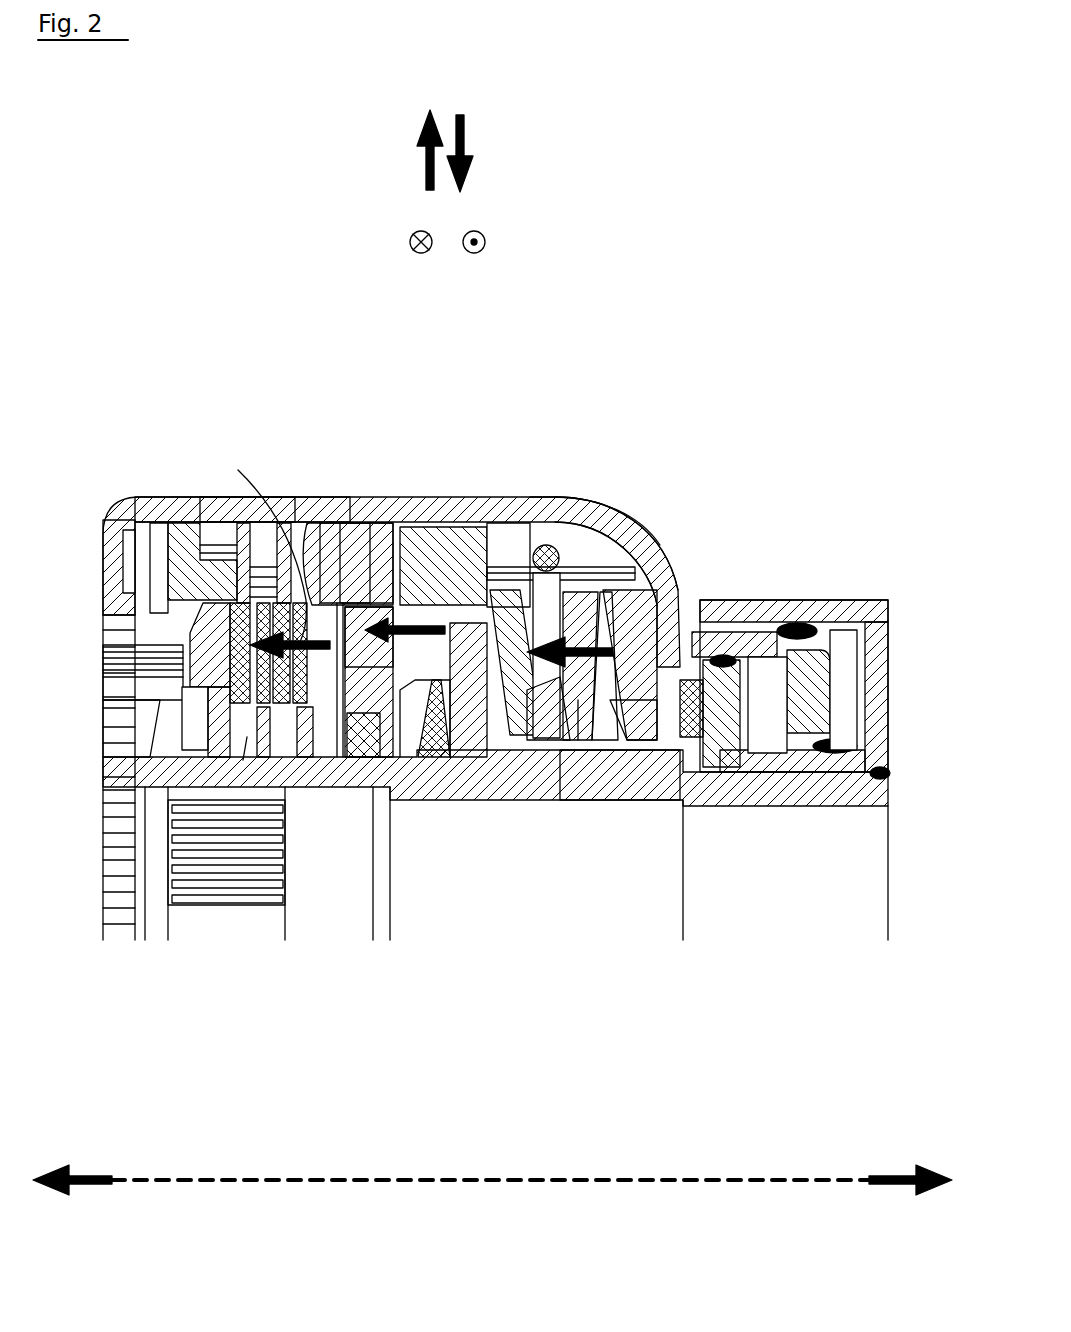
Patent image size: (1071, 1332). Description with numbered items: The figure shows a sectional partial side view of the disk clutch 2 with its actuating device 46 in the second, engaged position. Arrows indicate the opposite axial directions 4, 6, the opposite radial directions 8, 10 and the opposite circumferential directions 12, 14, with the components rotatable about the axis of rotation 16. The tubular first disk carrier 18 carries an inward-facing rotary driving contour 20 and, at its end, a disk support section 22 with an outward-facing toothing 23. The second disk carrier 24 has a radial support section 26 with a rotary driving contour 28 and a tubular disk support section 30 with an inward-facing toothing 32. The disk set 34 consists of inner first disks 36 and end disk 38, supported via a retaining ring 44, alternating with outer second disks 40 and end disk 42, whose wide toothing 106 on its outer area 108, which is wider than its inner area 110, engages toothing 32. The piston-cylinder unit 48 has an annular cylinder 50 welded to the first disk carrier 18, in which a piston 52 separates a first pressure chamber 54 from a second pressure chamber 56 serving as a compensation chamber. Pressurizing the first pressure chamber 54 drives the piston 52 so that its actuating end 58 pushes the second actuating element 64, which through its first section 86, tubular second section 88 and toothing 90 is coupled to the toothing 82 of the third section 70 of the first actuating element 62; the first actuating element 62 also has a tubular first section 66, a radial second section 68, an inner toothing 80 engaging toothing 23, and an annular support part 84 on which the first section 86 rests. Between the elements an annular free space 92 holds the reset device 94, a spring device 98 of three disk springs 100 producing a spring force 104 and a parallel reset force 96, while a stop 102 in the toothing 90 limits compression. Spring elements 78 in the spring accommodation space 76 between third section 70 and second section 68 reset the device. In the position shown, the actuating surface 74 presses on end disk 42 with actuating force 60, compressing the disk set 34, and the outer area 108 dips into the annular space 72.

The disk clutch 2 is at (796, 392).
The axial direction 4 is at (89, 1186).
The axial direction 6 is at (895, 1187).
The radial direction 8 is at (428, 163).
The radial direction 10 is at (466, 135).
The circumferential direction 12 is at (486, 236).
The circumferential direction 14 is at (409, 236).
The axis of rotation 16 is at (717, 1186).
The first disk carrier 18 is at (560, 822).
The rotary driving contour 20 is at (180, 892).
The disk support section 22 is at (220, 772).
The toothing 23 is at (247, 750).
The second disk carrier 24 is at (112, 487).
The support section 26 is at (113, 574).
The rotary driving contour 28 is at (115, 752).
The disk support section 30 is at (190, 508).
The toothing 32 is at (208, 530).
The disk set 34 is at (172, 627).
The first disks 36 is at (307, 692).
The end disk 38 is at (217, 698).
The second disks 40 is at (283, 560).
The end disk 42 is at (300, 520).
The retaining ring 44 is at (200, 712).
The actuating device 46 is at (546, 476).
The piston-cylinder unit 48 is at (839, 576).
The cylinder 50 is at (848, 612).
The piston 52 is at (822, 668).
The first pressure chamber 54 is at (850, 677).
The second pressure chamber 56 is at (767, 695).
The actuating end 58 is at (695, 650).
The actuating force 60 is at (257, 543).
The first actuating element 62 is at (606, 792).
The second actuating element 64 is at (588, 498).
The first section 66 is at (622, 745).
The second section 68 is at (478, 700).
The third section 70 is at (392, 692).
The annular space 72 is at (388, 612).
The actuating surface 74 is at (343, 705).
The spring accommodation space 76 is at (420, 692).
The spring element 78 is at (452, 705).
The toothing 80 is at (392, 655).
The toothing 82 is at (452, 540).
The support part 84 is at (697, 720).
The first section 86 is at (697, 643).
The second section 88 is at (505, 522).
The toothing 90 is at (508, 530).
The free space 92 is at (650, 612).
The reset device 94 is at (603, 583).
The reset force 96 is at (418, 600).
The spring device 98 is at (580, 666).
The disk springs 100 is at (565, 700).
The stop 102 is at (550, 546).
The spring force 104 is at (578, 740).
The toothing 106 is at (357, 528).
The outer area 108 is at (345, 565).
The inner area 110 is at (327, 690).